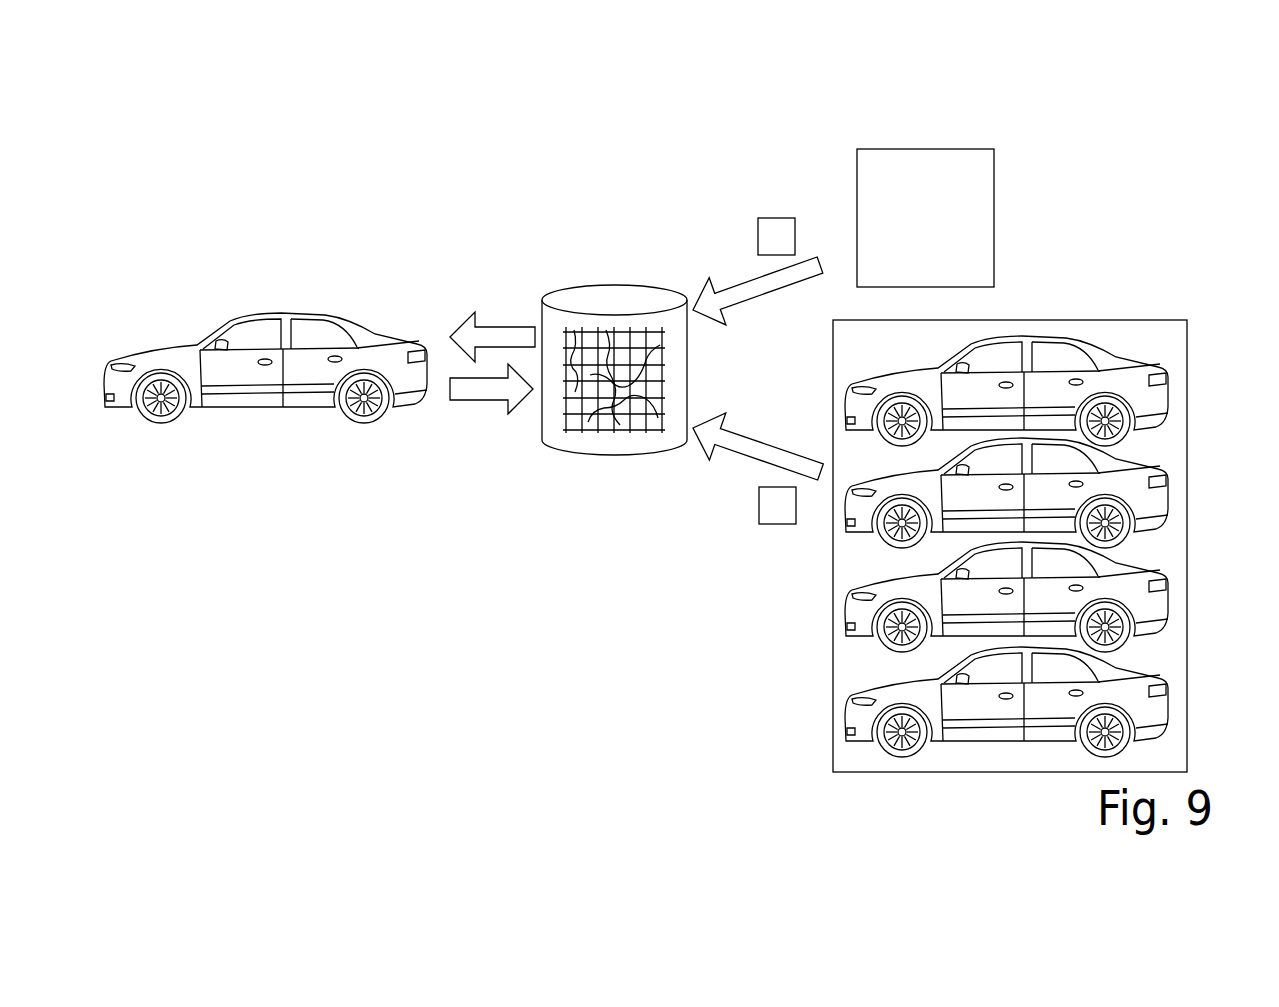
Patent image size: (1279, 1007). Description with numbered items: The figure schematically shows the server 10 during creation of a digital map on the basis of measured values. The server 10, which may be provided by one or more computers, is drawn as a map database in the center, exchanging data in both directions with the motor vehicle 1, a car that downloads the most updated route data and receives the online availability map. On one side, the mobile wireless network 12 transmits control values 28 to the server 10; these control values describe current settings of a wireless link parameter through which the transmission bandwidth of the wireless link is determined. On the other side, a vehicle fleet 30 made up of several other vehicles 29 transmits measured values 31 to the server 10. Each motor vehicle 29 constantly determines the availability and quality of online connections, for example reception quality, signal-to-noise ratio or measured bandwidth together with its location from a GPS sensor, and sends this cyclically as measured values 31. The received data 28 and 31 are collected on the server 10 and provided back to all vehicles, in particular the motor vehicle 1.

The motor vehicle 1 is at (345, 327).
The server 10 is at (615, 296).
The mobile wireless network 12 is at (922, 160).
The control values 28 is at (773, 227).
The other vehicle 29 is at (1160, 397).
The vehicle fleet 30 is at (1175, 333).
The measured values 31 is at (780, 510).